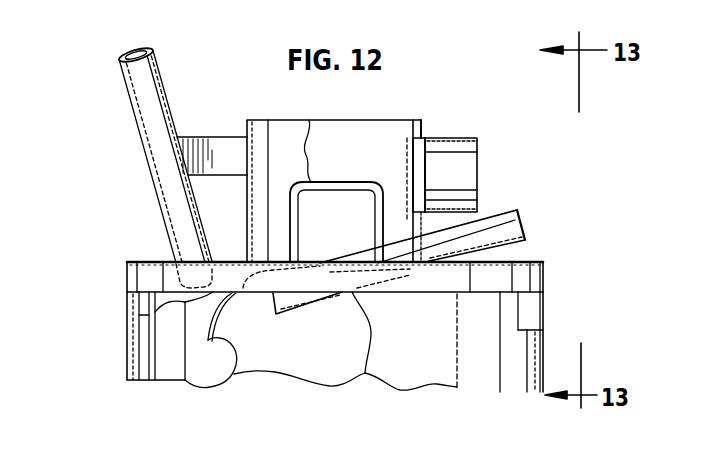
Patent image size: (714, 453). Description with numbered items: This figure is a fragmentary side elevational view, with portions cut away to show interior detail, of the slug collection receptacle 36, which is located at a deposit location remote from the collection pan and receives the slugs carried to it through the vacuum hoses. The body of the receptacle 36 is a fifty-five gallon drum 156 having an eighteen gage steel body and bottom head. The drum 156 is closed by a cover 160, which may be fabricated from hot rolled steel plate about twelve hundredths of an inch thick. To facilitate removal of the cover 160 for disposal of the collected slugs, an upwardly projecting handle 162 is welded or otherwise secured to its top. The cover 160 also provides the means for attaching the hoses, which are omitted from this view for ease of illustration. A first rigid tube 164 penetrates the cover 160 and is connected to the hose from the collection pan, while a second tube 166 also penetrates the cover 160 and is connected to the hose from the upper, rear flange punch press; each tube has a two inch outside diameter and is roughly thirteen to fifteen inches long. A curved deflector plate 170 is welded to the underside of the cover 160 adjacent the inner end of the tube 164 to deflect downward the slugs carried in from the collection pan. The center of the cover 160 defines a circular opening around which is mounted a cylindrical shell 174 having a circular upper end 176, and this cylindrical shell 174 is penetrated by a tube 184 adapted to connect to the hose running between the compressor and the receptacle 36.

The slug collection receptacle 36 is at (588, 284).
The drum 156 is at (547, 329).
The cover 160 is at (545, 280).
The handle 162 is at (309, 120).
The first rigid tube 164 is at (504, 212).
The second tube 166 is at (131, 105).
The curved deflector plate 170 is at (223, 378).
The cylindrical shell 174 is at (248, 200).
The circular upper end 176 is at (383, 120).
The tube 184 is at (461, 140).